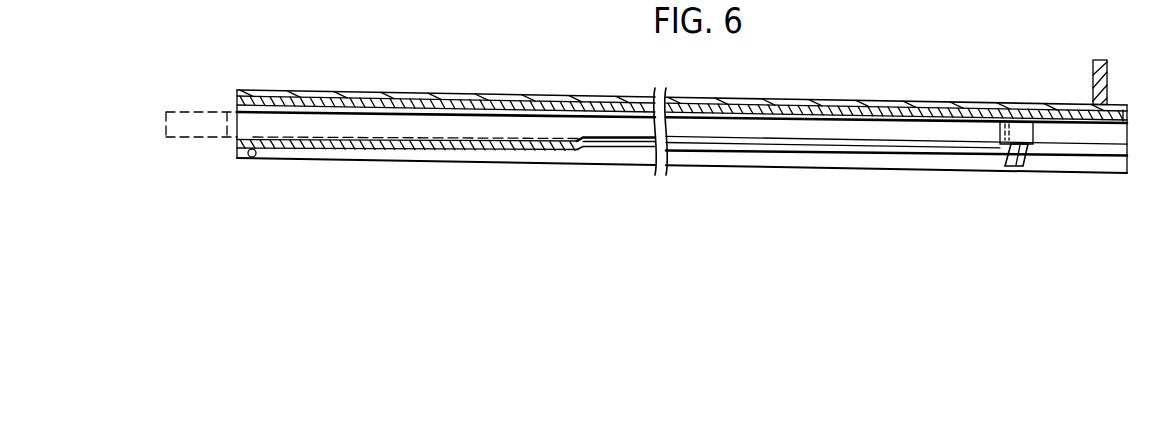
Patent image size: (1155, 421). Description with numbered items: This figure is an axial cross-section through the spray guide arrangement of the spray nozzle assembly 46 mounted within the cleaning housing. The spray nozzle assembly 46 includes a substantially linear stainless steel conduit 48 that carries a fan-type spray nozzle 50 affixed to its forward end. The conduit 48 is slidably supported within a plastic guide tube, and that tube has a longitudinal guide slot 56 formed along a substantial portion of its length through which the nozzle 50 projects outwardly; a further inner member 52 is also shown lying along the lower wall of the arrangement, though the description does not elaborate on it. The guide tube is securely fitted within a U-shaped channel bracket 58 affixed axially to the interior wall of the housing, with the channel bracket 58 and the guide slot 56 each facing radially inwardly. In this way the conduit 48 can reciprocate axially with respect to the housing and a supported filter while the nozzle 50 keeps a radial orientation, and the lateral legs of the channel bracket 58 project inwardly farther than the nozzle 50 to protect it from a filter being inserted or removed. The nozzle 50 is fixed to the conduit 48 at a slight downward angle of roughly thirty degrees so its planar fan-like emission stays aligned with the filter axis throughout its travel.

The spray nozzle assembly 46 is at (386, 170).
The conduit 48 is at (232, 122).
The spray nozzle 50 is at (1016, 170).
The inner hatched liner 52 is at (498, 150).
The guide slot 56 is at (762, 142).
The channel bracket 58 is at (498, 106).